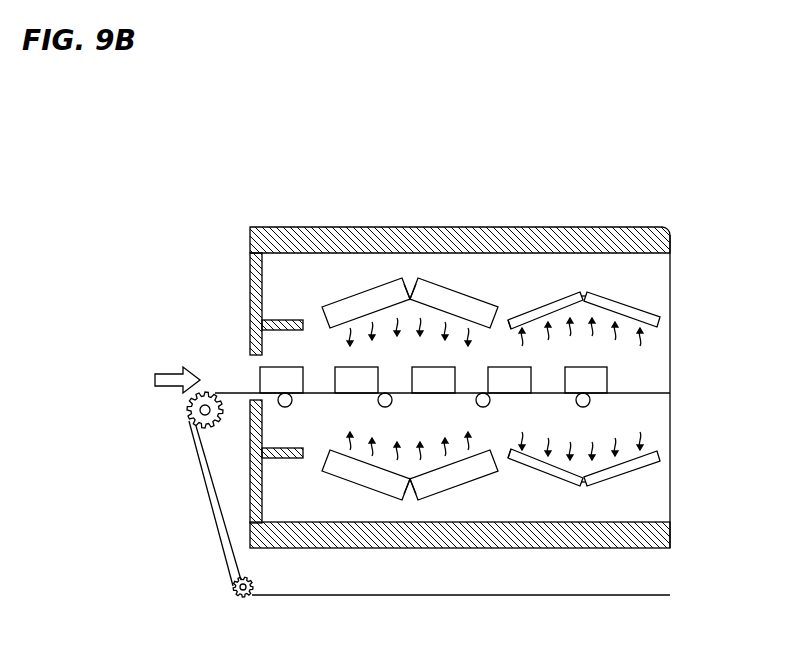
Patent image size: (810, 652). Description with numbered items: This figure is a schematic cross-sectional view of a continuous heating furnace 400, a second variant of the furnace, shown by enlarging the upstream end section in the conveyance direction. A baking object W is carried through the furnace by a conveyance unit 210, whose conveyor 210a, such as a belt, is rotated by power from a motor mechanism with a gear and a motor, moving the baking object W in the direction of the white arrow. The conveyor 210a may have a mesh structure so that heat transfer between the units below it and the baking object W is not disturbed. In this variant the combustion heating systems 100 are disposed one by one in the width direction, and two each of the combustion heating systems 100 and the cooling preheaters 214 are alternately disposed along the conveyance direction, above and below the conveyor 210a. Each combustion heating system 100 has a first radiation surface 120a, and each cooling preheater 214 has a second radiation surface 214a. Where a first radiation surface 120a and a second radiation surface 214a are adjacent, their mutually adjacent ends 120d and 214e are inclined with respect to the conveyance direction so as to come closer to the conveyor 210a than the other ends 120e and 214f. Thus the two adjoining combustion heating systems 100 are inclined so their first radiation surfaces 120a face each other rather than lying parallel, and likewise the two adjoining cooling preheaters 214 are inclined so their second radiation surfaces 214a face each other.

The continuous heating furnace 400 is at (752, 104).
The combustion heating system 100 is at (323, 292).
The baking object W is at (607, 378).
The conveyance unit 210 is at (188, 494).
The conveyor 210a is at (204, 477).
The first radiation surface 120a is at (374, 324).
The end 120d is at (479, 332).
The other end 120e is at (403, 304).
The cooling preheater 214 is at (628, 391).
The second radiation surface 214a is at (553, 325).
The end 214e is at (513, 319).
The other end 214f is at (584, 291).